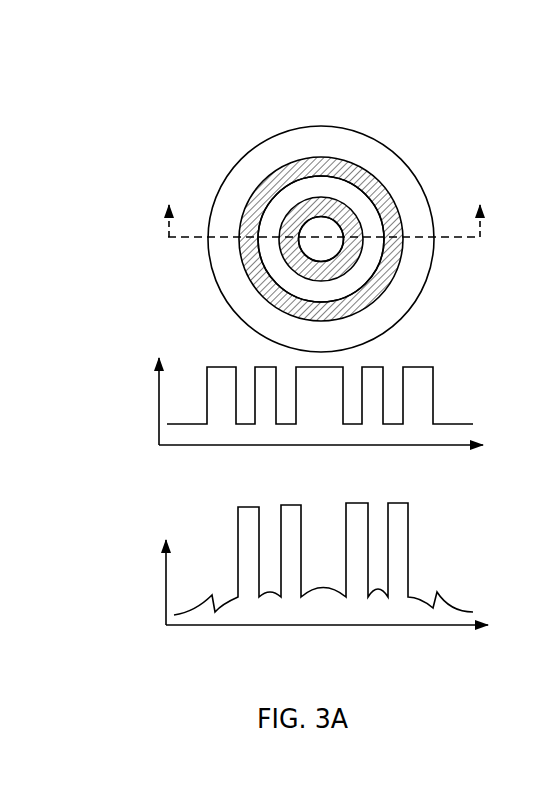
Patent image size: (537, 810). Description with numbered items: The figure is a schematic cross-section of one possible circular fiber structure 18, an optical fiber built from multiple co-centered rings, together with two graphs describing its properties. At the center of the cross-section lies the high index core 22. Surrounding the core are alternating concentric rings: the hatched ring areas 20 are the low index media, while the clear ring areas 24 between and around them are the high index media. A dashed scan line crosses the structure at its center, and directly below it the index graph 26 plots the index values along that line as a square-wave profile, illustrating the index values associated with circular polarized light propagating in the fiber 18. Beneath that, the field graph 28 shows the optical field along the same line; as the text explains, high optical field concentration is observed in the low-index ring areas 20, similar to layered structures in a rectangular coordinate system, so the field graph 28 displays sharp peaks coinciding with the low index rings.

The fiber structure 18 is at (172, 110).
The low index media areas 20 is at (337, 203).
The high index core 22 is at (325, 232).
The high index media areas 24 is at (381, 230).
The index graph 26 is at (128, 405).
The optical field graph 28 is at (143, 598).